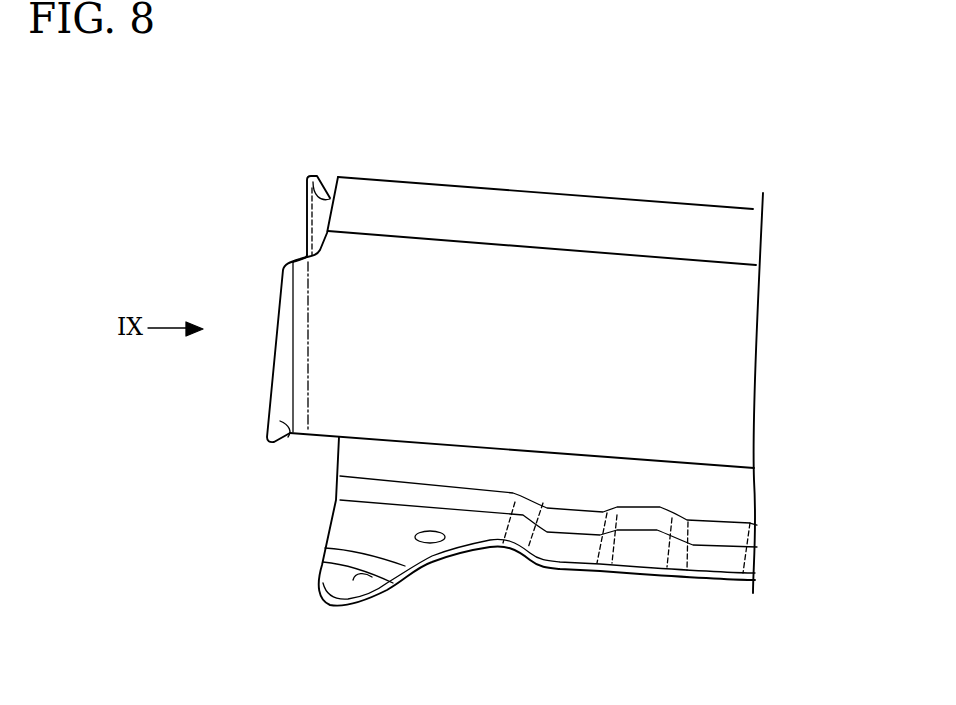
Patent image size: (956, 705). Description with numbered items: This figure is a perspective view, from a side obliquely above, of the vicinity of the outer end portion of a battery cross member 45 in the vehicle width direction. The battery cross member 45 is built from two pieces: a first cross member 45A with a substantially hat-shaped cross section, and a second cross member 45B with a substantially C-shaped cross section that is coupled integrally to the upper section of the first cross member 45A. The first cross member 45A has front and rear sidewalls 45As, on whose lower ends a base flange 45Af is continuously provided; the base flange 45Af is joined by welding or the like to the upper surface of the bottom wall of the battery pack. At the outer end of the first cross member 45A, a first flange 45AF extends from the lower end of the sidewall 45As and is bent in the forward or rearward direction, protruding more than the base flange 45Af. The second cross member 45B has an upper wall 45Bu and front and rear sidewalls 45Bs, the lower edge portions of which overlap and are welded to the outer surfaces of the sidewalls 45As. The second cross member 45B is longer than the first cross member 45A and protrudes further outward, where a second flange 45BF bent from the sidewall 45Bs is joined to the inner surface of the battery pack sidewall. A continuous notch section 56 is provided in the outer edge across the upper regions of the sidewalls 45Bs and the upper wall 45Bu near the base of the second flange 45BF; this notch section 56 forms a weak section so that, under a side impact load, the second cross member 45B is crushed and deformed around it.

The battery cross member 45 is at (680, 192).
The first cross member 45A is at (730, 493).
The second cross member 45B is at (728, 240).
The upper wall 45Bu is at (503, 218).
The sidewall 45Bs is at (707, 353).
The second flange 45BF is at (325, 184).
The first flange 45AF is at (380, 580).
The sidewall 45As is at (655, 482).
The base flange 45Af is at (718, 538).
The notch section 56 is at (313, 252).